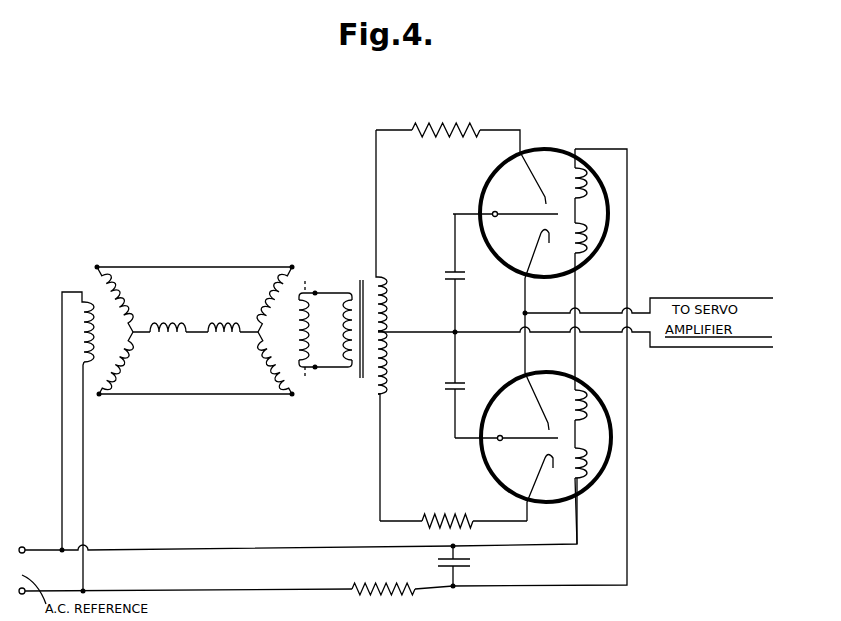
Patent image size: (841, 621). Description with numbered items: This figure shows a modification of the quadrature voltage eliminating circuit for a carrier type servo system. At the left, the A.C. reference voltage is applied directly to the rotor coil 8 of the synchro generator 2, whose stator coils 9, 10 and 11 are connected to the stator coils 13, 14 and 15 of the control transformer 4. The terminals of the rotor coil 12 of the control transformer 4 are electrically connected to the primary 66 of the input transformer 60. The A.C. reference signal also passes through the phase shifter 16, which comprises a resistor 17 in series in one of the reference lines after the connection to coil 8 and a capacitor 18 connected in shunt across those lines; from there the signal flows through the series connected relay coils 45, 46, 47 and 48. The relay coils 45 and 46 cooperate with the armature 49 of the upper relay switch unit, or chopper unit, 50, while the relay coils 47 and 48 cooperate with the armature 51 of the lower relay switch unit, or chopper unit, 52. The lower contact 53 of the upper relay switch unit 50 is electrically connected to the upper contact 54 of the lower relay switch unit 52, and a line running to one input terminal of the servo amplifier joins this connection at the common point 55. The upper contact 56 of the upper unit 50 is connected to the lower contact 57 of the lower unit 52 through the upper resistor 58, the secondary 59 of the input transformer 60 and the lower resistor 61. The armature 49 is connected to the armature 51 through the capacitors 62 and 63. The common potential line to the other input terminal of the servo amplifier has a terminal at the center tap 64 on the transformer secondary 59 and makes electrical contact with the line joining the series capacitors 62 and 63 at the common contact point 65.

The synchro generator 2 is at (127, 330).
The control transformer 4 is at (258, 330).
The rotor coil 8 is at (83, 340).
The stator coil 9 is at (120, 374).
The stator coil 10 is at (165, 330).
The stator coil 11 is at (122, 300).
The rotor coil 12 is at (317, 330).
The stator coil 13 is at (262, 298).
The stator coil 14 is at (216, 336).
The stator coil 15 is at (262, 367).
The phase shifter 16 is at (389, 568).
The resistor 17 is at (400, 593).
The capacitor 18 is at (470, 560).
The relay coil 45 is at (572, 184).
The relay coil 46 is at (581, 238).
The relay coil 47 is at (572, 406).
The relay coil 48 is at (581, 462).
The armature 49 is at (515, 217).
The upper relay switch unit 50 is at (543, 150).
The armature 51 is at (513, 441).
The lower relay switch unit 52 is at (508, 389).
The lower contact 53 is at (549, 243).
The upper contact 54 is at (543, 421).
The common point 55 is at (527, 313).
The upper contact 56 is at (540, 198).
The lower contact 57 is at (553, 468).
The upper resistor 58 is at (447, 128).
The secondary 59 is at (388, 294).
The input transformer 60 is at (360, 283).
The lower resistor 61 is at (447, 515).
The capacitor 62 is at (467, 276).
The capacitor 63 is at (445, 386).
The center tap 64 is at (382, 333).
The common contact point 65 is at (458, 330).
The primary 66 is at (340, 353).